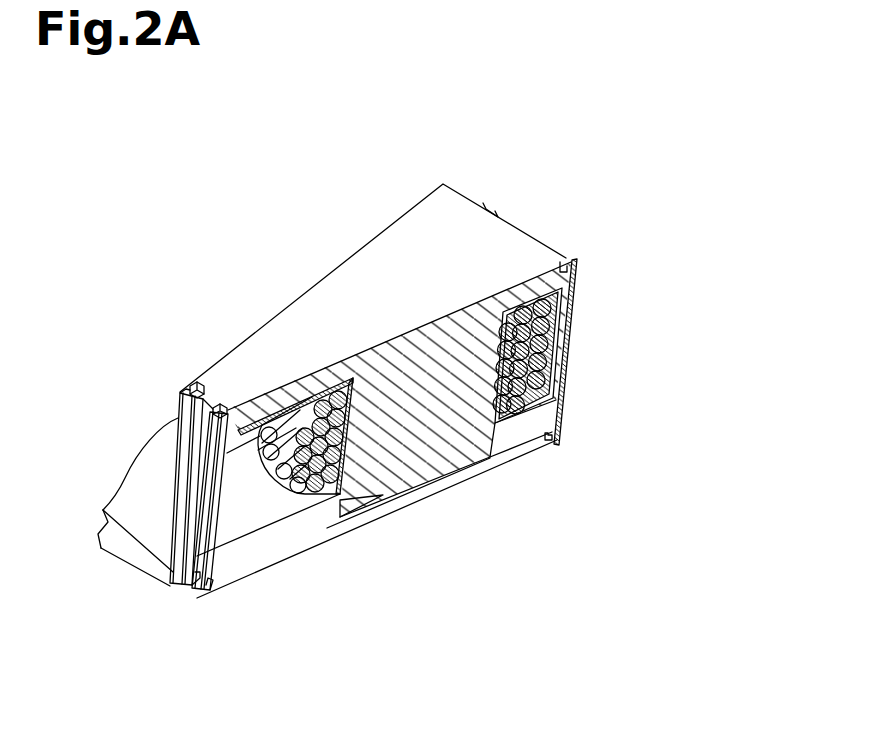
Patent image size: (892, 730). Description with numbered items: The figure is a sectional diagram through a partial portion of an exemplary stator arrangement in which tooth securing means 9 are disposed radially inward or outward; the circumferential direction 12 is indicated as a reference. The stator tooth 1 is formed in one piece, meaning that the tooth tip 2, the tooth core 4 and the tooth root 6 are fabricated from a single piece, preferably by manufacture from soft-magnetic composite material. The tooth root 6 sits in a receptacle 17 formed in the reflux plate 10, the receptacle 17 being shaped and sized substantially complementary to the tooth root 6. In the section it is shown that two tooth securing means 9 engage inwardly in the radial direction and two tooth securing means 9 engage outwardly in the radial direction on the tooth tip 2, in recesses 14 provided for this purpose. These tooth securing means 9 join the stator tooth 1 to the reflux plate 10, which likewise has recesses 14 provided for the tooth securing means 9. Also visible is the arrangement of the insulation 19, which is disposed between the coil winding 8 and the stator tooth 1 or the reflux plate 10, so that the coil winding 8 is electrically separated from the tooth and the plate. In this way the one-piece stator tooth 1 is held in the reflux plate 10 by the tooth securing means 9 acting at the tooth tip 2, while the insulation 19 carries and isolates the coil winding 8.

The stator tooth 1 is at (357, 292).
The tooth tip 2 is at (570, 282).
The tooth core 4 is at (375, 447).
The tooth root 6 is at (410, 473).
The coil winding 8 is at (560, 358).
The tooth securing means 9 is at (497, 216).
The reflux plate 10 is at (497, 457).
The circumferential direction 12 is at (248, 6).
The recess 14 is at (543, 255).
The receptacle 17 is at (327, 528).
The insulation 19 is at (553, 407).